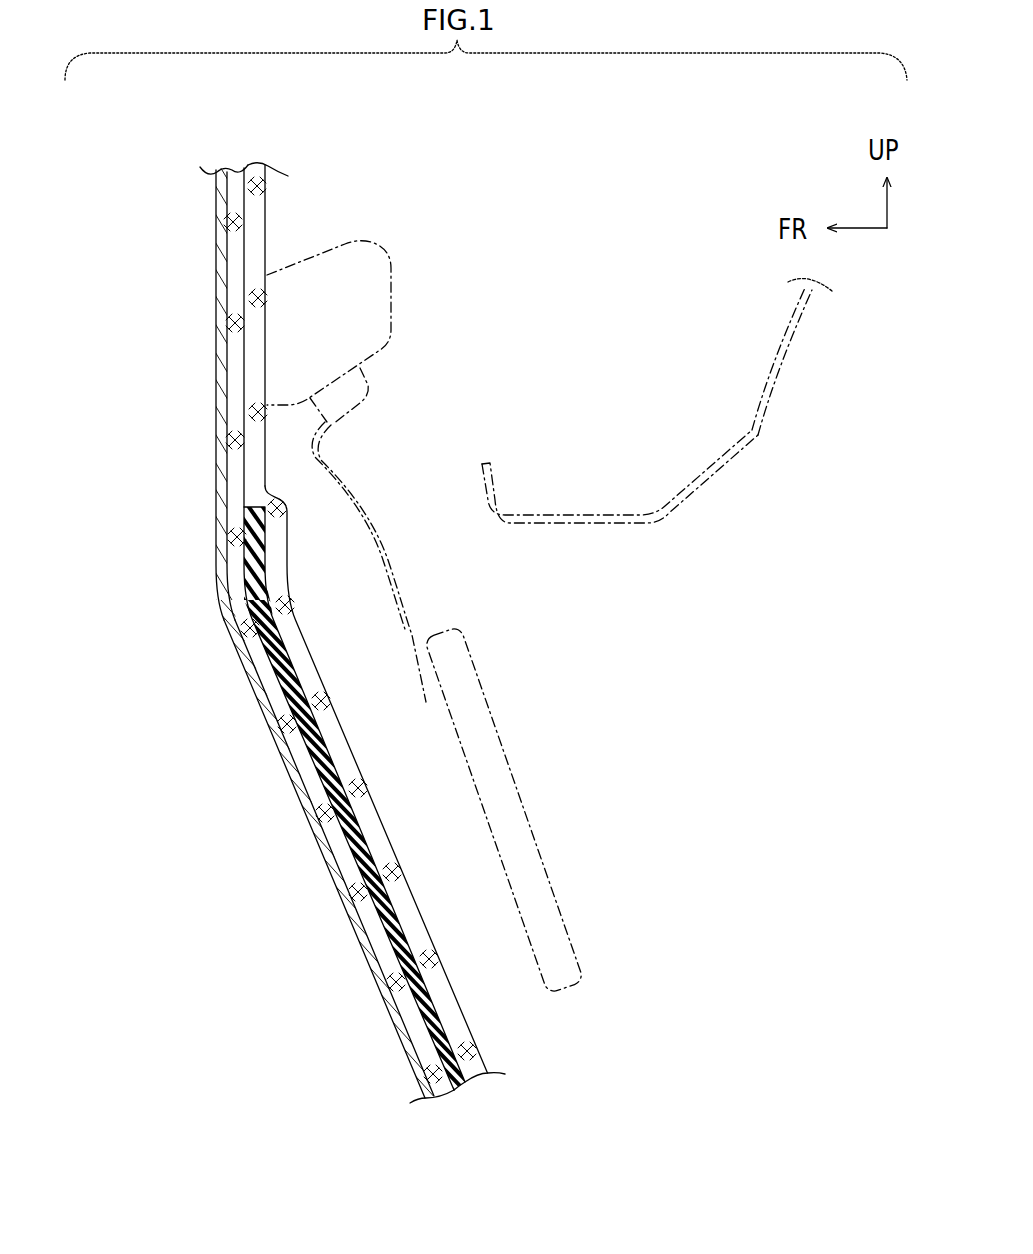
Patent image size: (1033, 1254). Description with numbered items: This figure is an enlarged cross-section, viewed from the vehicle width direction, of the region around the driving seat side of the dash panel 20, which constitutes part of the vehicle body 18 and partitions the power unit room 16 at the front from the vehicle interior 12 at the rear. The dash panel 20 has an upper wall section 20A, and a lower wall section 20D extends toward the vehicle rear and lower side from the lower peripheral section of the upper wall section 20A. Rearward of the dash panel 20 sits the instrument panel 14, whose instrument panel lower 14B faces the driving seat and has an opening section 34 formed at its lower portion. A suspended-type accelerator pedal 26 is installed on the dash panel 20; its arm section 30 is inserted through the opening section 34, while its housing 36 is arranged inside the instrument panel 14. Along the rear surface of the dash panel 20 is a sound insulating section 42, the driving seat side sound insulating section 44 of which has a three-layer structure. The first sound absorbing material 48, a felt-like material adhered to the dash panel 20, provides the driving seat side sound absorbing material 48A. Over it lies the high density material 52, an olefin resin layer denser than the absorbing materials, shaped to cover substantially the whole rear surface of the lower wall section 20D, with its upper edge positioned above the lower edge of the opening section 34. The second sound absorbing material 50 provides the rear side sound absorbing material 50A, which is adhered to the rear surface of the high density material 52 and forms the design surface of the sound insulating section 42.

The vehicle interior 12 is at (710, 321).
The instrument panel 14 is at (827, 366).
The instrument panel lower 14B is at (792, 345).
The power unit room 16 is at (98, 363).
The vehicle body 18 is at (444, 635).
The dash panel 20 is at (214, 460).
The upper wall section 20A is at (216, 242).
The lower wall section 20D is at (302, 790).
The accelerator pedal 26 is at (418, 370).
The arm section 30 is at (353, 477).
The opening section 34 is at (488, 520).
The housing 36 is at (375, 288).
The sound insulating section 42 is at (350, 623).
The driving seat side sound insulating section 44 is at (316, 214).
The first sound absorbing material 48 is at (472, 800).
The driving seat side sound absorbing material 48A is at (413, 1028).
The second sound absorbing material 50 is at (463, 788).
The rear side sound absorbing material 50A is at (457, 1022).
The high density material 52 is at (348, 822).